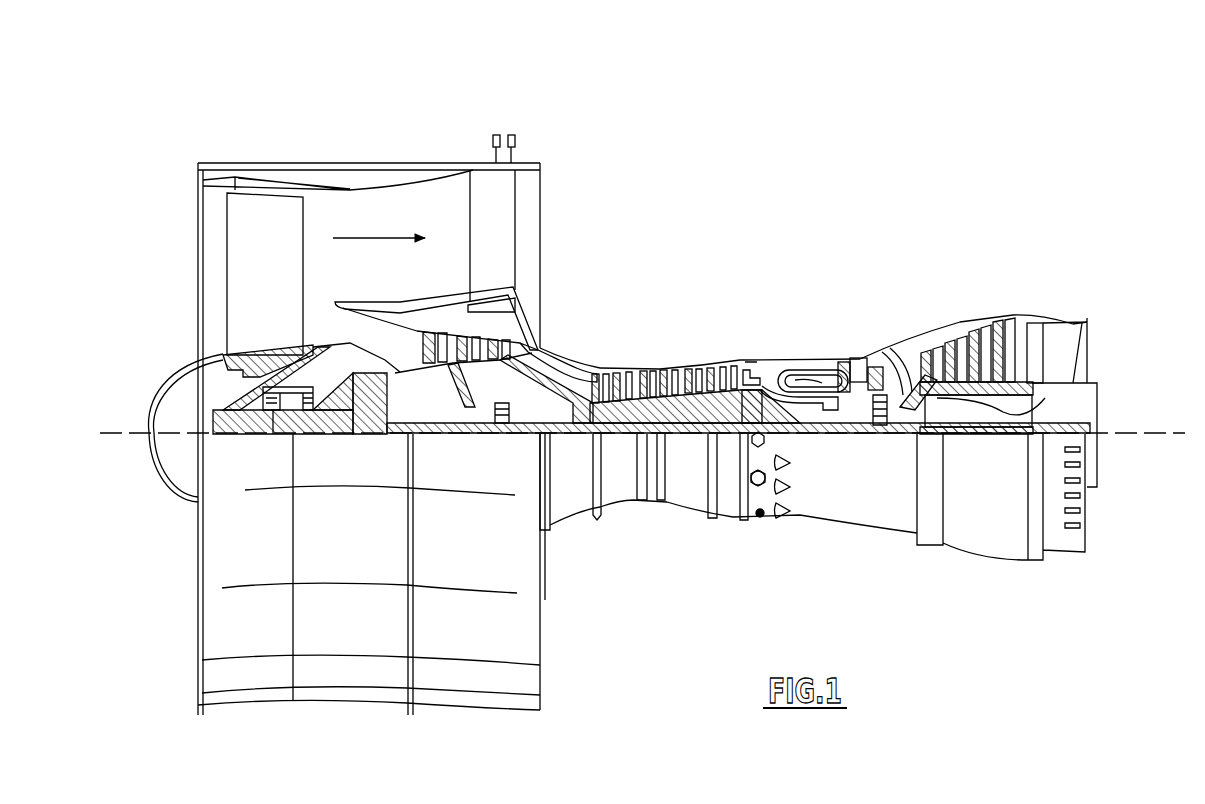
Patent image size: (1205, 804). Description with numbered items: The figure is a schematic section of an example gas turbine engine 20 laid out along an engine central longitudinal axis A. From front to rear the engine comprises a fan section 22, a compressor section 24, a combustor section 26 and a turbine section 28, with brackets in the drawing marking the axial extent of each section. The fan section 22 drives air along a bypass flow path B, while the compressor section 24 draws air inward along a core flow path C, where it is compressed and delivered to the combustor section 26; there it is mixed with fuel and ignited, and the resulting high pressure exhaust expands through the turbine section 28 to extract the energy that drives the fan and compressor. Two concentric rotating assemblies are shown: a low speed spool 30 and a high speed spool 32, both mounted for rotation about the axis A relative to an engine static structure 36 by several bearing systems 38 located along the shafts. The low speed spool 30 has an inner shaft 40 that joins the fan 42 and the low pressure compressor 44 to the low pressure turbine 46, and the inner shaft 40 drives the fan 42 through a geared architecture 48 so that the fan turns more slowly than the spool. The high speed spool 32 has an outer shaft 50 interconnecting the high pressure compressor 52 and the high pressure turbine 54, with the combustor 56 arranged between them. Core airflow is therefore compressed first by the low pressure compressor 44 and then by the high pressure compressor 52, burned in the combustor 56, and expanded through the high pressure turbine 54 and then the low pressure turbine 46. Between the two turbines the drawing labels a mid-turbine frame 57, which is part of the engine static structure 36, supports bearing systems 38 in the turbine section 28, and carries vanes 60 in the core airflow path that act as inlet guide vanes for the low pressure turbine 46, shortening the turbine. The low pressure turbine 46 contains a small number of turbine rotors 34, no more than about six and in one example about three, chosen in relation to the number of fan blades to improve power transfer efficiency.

The gas turbine engine 20 is at (803, 213).
The fan section 22 is at (186, 145).
The compressor section 24 is at (407, 280).
The combustor section 26 is at (740, 280).
The turbine section 28 is at (1040, 280).
The low speed spool 30 is at (688, 442).
The high speed spool 32 is at (732, 366).
The turbine rotors 34 is at (985, 398).
The engine static structure 36 is at (725, 518).
The bearing systems 38 is at (272, 434).
The inner shaft 40 is at (556, 440).
The fan 42 is at (278, 289).
The low pressure compressor section 44 is at (518, 294).
The low pressure turbine section 46 is at (973, 325).
The geared architecture 48 is at (375, 434).
The outer shaft 50 is at (806, 435).
The high pressure compressor section 52 is at (657, 373).
The high pressure turbine section 54 is at (860, 352).
The combustor 56 is at (795, 380).
The mid-turbine frame 57 is at (900, 345).
The vanes 60 is at (912, 388).
The engine central longitudinal axis A is at (1172, 432).
The bypass flow path B is at (367, 237).
The core flow path C is at (375, 339).